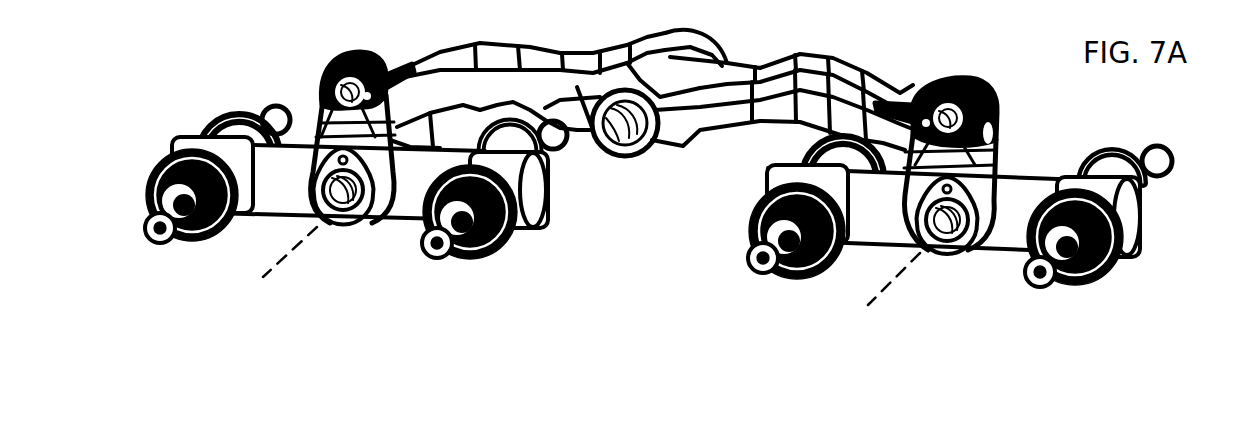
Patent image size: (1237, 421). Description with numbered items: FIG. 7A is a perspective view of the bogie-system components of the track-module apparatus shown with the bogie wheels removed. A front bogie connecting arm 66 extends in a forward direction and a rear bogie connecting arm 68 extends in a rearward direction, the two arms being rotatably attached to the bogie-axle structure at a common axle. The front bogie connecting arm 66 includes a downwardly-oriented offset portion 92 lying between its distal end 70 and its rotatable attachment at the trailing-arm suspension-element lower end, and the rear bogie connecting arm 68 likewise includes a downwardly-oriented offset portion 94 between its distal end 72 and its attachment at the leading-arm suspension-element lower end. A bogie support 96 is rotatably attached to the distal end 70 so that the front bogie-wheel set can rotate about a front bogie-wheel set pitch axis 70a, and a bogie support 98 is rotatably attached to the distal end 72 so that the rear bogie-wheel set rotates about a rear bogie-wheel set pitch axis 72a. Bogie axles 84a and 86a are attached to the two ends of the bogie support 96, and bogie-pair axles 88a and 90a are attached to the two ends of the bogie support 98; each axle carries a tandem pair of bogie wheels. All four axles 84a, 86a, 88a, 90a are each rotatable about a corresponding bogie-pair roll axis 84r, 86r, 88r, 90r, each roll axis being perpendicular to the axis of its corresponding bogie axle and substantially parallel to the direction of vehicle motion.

The front bogie connecting arm 66 is at (500, 60).
The rear bogie connecting arm 68 is at (810, 80).
The distal end 70 is at (347, 220).
The front bogie-wheel set pitch axis 70a is at (293, 243).
The distal end 72 is at (947, 247).
The rear bogie-wheel set pitch axis 72a is at (897, 277).
The axle 84a is at (148, 240).
The bogie-pair roll axis 84r is at (110, 168).
The axle 86a is at (463, 226).
The bogie-pair roll axis 86r is at (585, 247).
The axle 88a is at (760, 272).
The bogie-pair roll axis 88r is at (719, 199).
The axle 90a is at (1067, 255).
The bogie-pair roll axis 90r is at (1207, 224).
The downwardly-oriented offset portion 92 is at (346, 160).
The downwardly-oriented offset portion 94 is at (958, 187).
The bogie support 96 is at (289, 190).
The bogie support 98 is at (892, 218).